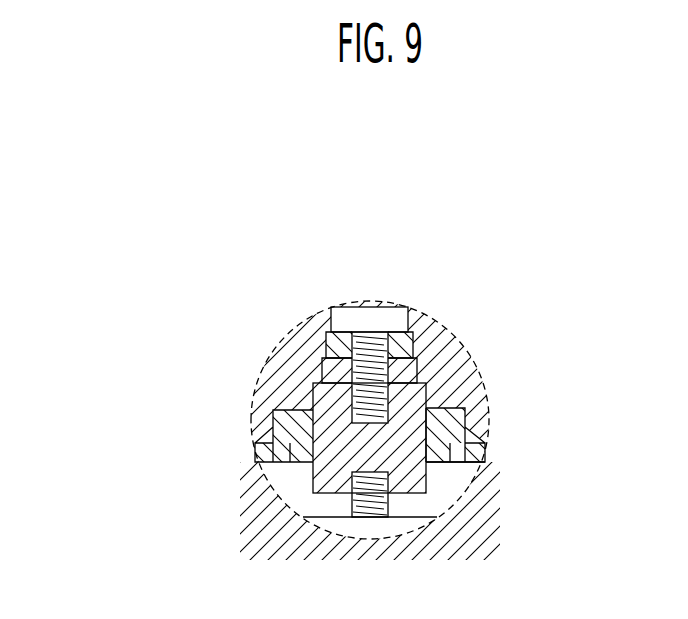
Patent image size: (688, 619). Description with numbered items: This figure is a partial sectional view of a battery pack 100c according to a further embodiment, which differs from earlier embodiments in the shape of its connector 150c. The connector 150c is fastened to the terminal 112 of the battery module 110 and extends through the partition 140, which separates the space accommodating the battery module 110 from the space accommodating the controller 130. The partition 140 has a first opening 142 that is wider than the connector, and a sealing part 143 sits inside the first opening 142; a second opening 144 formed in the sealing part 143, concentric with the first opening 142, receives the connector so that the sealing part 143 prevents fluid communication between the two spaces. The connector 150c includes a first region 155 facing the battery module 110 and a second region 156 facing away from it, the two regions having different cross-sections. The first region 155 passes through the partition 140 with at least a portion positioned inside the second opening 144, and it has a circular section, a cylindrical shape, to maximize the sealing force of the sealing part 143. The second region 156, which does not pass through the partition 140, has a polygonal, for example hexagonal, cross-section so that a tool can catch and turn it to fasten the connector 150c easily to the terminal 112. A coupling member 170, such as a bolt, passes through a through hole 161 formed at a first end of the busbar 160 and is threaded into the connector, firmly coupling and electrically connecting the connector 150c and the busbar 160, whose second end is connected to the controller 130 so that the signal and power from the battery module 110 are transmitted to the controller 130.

The battery pack 100c is at (90, 240).
The battery module 110 is at (408, 520).
The terminal 112 is at (376, 506).
The controller 130 is at (457, 353).
The partition 140 is at (498, 451).
The first opening 142 is at (430, 462).
The sealing part 143 is at (448, 407).
The second opening 144 is at (432, 434).
The connector 150c is at (208, 325).
The first region 155 is at (325, 428).
The second region 156 is at (322, 360).
The busbar 160 is at (413, 334).
The through hole 161 is at (323, 334).
The coupling member 170 is at (377, 299).